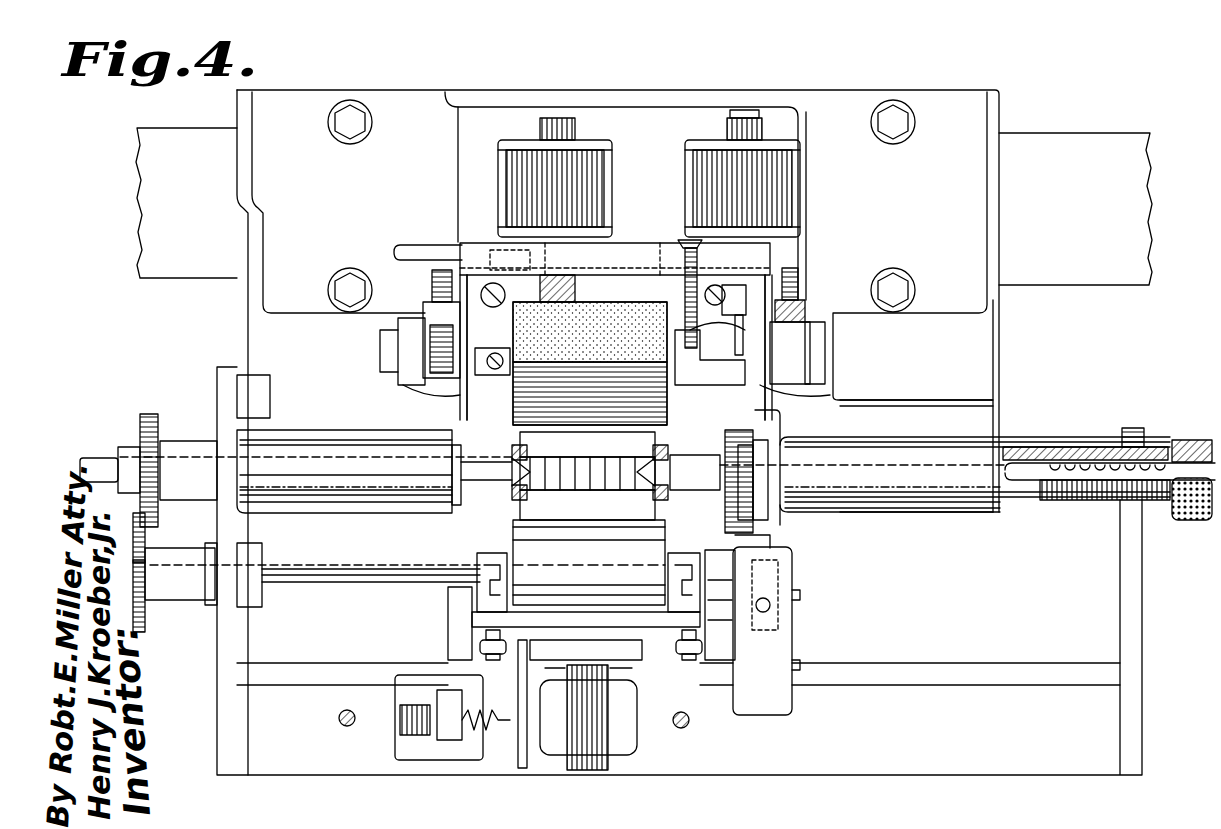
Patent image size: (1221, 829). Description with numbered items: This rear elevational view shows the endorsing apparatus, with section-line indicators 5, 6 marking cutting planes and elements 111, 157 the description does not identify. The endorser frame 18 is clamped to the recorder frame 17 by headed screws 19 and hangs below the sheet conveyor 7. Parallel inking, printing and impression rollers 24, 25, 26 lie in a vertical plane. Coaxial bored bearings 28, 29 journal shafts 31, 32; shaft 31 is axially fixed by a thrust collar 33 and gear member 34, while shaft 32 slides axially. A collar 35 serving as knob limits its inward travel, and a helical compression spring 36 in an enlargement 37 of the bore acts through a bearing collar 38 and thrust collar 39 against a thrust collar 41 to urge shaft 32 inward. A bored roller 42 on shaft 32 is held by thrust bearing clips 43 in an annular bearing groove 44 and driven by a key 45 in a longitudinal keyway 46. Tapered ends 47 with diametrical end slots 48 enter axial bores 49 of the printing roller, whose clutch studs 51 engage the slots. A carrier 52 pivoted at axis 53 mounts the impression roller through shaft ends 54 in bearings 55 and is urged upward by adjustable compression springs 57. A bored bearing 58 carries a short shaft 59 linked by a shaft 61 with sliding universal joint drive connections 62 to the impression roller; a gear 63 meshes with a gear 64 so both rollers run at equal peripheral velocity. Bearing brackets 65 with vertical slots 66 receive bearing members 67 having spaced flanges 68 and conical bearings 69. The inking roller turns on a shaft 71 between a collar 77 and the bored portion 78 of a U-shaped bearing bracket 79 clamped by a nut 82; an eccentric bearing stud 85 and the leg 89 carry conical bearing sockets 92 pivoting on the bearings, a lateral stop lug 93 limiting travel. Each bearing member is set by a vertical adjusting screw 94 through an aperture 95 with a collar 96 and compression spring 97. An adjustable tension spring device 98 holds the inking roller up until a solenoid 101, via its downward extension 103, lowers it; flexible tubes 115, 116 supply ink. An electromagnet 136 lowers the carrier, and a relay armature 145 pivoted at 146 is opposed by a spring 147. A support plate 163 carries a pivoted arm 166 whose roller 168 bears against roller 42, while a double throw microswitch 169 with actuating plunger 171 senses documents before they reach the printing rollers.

The section line 5- 5 is at (466, 290).
The section line 6- 6 is at (743, 290).
The sheet conveyor 7 is at (532, 810).
The recorder frame 17 is at (1070, 146).
The endorser frame 18 is at (993, 330).
The headed screws 19 is at (340, 140).
The inking roller 24 is at (640, 298).
The printing roller 25 is at (688, 510).
The impression roller 26 is at (589, 518).
The bored bearing 28 is at (296, 506).
The bored bearing 29 is at (1014, 508).
The shaft 31 is at (512, 452).
The shaft 32 is at (721, 525).
The thrust collar 33 is at (460, 432).
The gear member 34 is at (125, 450).
The collar 35 is at (1192, 442).
The helical compression spring 36 is at (1106, 450).
The enlargement of bore 37 is at (1082, 450).
The bearing collar 38 is at (1062, 450).
The thrust collar 39 is at (1046, 450).
The thrust collar 41 is at (1148, 442).
The bored roller 42 is at (742, 455).
The thrust bearing clips 43 is at (782, 440).
The annular bearing groove 44 is at (810, 446).
The key 45 is at (772, 470).
The longitudinal keyway 46 is at (695, 472).
The tapered ends 47 is at (503, 470).
The diametrical end slots 48 is at (500, 484).
The axial bores 49 is at (506, 492).
The clutch studs 51 is at (515, 506).
The carrier 52 is at (478, 622).
The pivotal axis 53 is at (446, 612).
The shaft ends 54 is at (480, 566).
The bearings 55 is at (478, 572).
The adjustable compression springs 57 is at (480, 646).
The bored bearing 58 is at (185, 548).
The short shaft 59 is at (165, 594).
The shaft 61 is at (366, 585).
The sliding universal joint drive connections 62 is at (272, 562).
The gear 63 is at (135, 526).
The gear 64 is at (150, 416).
The bearing brackets 65 is at (428, 312).
The vertical slots 66 is at (822, 338).
The bearing members 67 is at (410, 380).
The spaced flanges 68 is at (405, 356).
The conical bearings 69 is at (467, 380).
The shaft 71 is at (590, 350).
The collar 77 is at (530, 381).
The bored portion 78 is at (634, 356).
The bearing bracket 79 is at (700, 398).
The nut 82 is at (692, 280).
The eccentric bearing stud 85 is at (441, 324).
The leg 89 is at (770, 272).
The conical bearing sockets 92 is at (490, 352).
The lateral stop lug 93 is at (795, 300).
The vertical adjusting screw 94 is at (428, 272).
The aperture 95 is at (812, 380).
The collar 96 is at (798, 392).
The compression spring 97 is at (815, 346).
The adjustable tension spring device 98 is at (722, 320).
The solenoid 101 is at (778, 166).
The downward extension 103 is at (738, 355).
The magnet coil 111 is at (588, 186).
The flexible tube 115 is at (412, 248).
The flexible tube 116 is at (611, 331).
The electromagnet 136 is at (610, 755).
The armature 145 is at (450, 705).
The pivot 146 is at (452, 762).
The spring 147 is at (474, 726).
The gear 157 is at (170, 404).
The support plate 163 is at (724, 575).
The arm 166 is at (772, 545).
The roller 168 is at (702, 540).
The double throw microswitch 169 is at (786, 616).
The actuating plunger 171 is at (763, 613).